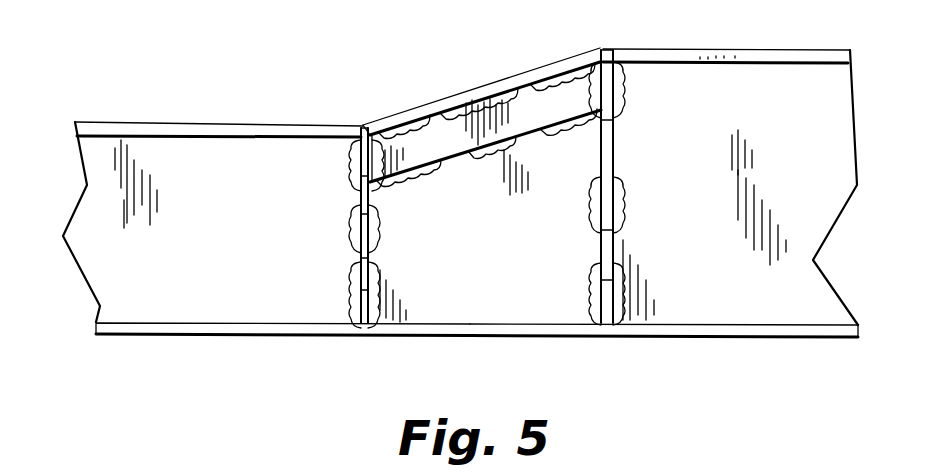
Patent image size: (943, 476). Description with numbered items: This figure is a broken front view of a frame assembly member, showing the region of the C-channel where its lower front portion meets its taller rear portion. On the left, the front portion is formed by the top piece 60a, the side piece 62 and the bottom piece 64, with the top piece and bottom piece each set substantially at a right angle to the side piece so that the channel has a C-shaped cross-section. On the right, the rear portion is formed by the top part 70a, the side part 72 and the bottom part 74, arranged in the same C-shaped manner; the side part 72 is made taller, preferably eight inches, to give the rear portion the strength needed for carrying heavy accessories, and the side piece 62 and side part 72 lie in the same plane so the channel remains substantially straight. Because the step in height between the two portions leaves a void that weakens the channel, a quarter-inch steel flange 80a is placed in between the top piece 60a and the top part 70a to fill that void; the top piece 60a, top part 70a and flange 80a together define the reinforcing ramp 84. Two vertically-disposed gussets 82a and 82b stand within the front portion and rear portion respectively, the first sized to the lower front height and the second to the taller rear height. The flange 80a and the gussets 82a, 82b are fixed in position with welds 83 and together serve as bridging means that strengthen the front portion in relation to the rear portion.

The top piece 60a is at (253, 122).
The side piece 62 is at (200, 254).
The bottom piece 64 is at (219, 337).
The top part 70a is at (771, 49).
The side part 72 is at (714, 131).
The bottom part 74 is at (778, 338).
The flange 80a is at (530, 66).
The gusset 82a is at (357, 253).
The gusset 82b is at (614, 158).
The welds 83 is at (351, 220).
The reinforcing ramp 84 is at (463, 68).